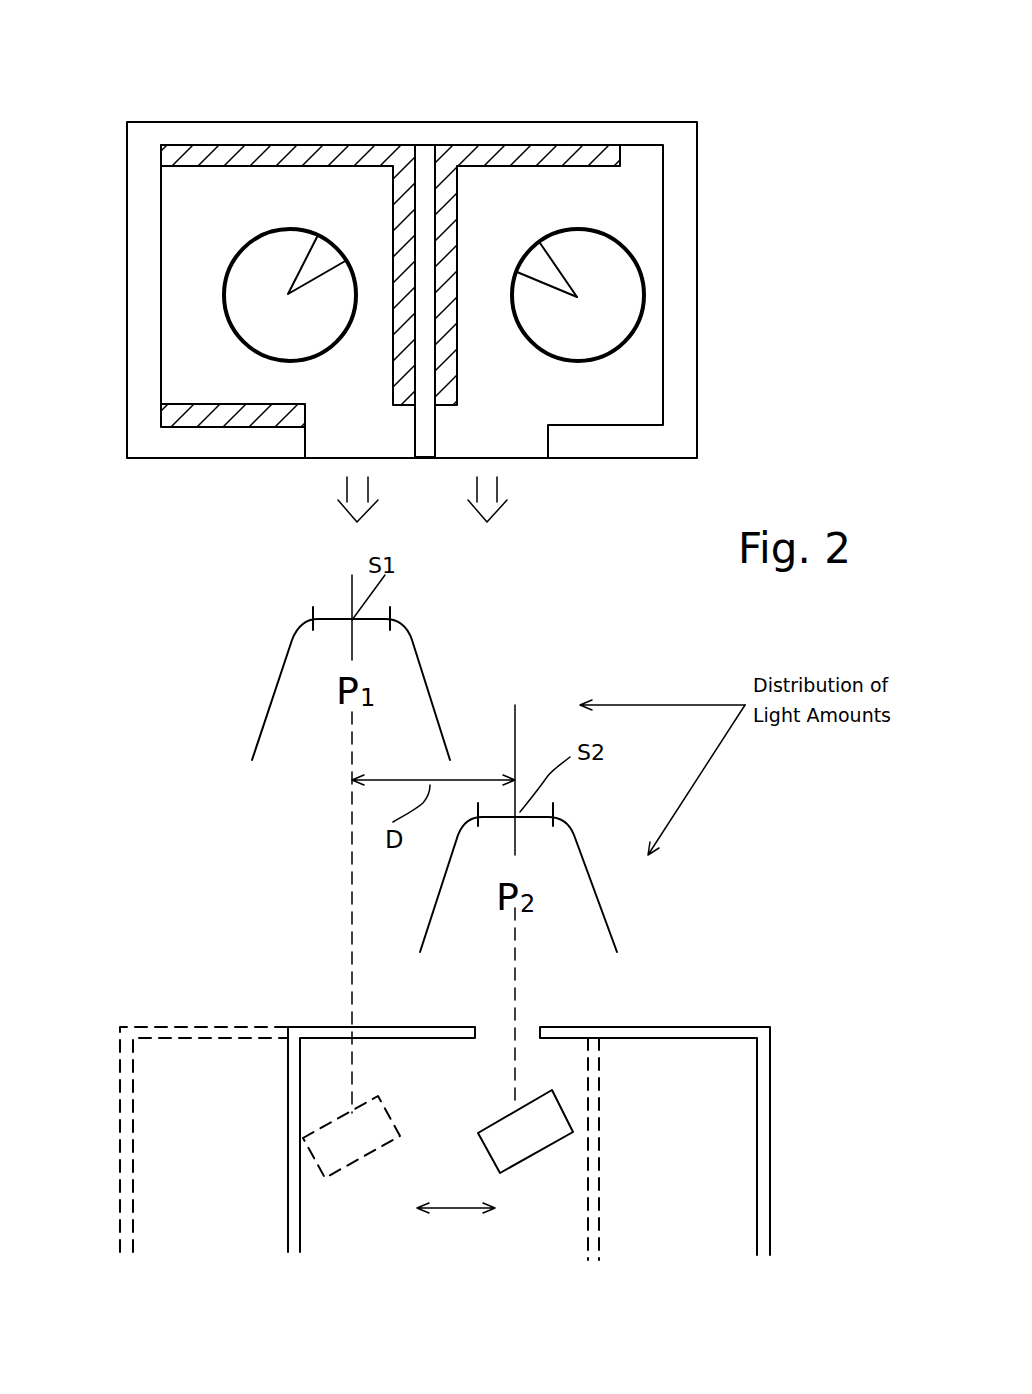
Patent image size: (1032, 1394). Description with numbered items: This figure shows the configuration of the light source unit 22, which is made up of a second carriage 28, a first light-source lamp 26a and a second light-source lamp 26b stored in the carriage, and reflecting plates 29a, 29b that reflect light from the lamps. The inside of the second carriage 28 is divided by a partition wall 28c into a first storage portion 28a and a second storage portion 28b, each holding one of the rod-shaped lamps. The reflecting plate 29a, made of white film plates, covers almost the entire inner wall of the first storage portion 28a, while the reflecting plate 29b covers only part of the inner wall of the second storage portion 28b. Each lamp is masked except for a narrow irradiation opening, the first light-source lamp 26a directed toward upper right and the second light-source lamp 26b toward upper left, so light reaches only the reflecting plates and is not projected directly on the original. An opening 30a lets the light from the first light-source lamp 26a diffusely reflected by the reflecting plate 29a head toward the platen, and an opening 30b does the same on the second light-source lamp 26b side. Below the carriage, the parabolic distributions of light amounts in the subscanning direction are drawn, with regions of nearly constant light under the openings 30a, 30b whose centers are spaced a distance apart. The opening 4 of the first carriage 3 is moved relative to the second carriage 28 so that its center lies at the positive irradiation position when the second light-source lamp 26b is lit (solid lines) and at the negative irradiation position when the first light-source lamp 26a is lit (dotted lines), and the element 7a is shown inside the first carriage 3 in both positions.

The light source unit 22 is at (360, 100).
The second carriage 28 is at (680, 137).
The first storage portion 28a is at (210, 188).
The second storage portion 28b is at (648, 208).
The partition wall 28c is at (425, 433).
The reflecting plate 29a is at (290, 150).
The reflecting plate 29b is at (508, 150).
The first light-source lamp 26a is at (273, 345).
The second light-source lamp 26b is at (640, 333).
The opening 30a is at (323, 465).
The opening 30b is at (522, 448).
The opening 4 is at (530, 1018).
The first carriage 3 is at (773, 1085).
The reflecting portion 7a is at (343, 1165).